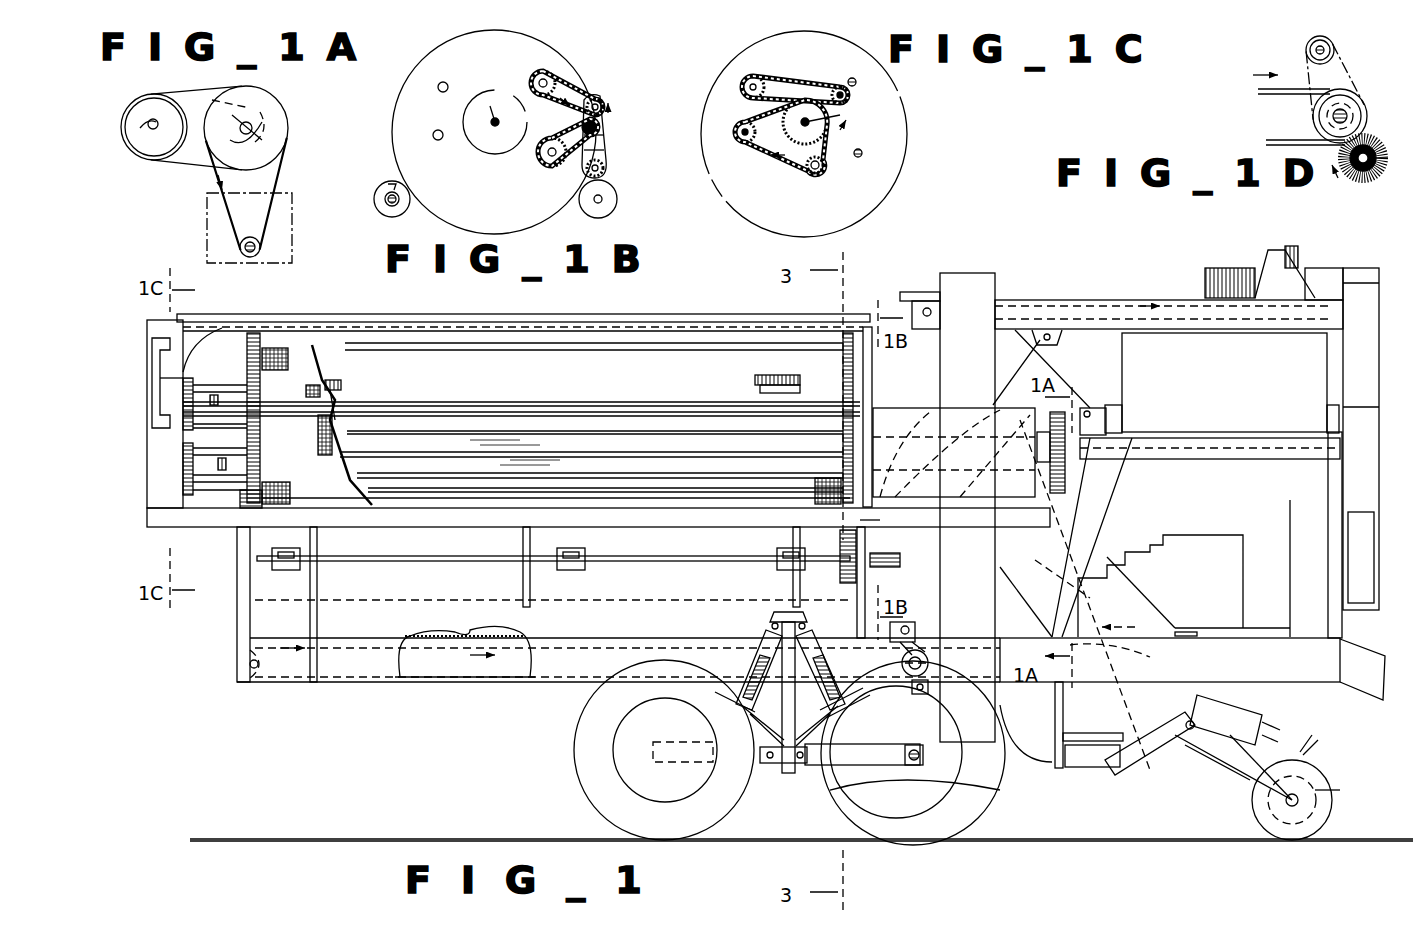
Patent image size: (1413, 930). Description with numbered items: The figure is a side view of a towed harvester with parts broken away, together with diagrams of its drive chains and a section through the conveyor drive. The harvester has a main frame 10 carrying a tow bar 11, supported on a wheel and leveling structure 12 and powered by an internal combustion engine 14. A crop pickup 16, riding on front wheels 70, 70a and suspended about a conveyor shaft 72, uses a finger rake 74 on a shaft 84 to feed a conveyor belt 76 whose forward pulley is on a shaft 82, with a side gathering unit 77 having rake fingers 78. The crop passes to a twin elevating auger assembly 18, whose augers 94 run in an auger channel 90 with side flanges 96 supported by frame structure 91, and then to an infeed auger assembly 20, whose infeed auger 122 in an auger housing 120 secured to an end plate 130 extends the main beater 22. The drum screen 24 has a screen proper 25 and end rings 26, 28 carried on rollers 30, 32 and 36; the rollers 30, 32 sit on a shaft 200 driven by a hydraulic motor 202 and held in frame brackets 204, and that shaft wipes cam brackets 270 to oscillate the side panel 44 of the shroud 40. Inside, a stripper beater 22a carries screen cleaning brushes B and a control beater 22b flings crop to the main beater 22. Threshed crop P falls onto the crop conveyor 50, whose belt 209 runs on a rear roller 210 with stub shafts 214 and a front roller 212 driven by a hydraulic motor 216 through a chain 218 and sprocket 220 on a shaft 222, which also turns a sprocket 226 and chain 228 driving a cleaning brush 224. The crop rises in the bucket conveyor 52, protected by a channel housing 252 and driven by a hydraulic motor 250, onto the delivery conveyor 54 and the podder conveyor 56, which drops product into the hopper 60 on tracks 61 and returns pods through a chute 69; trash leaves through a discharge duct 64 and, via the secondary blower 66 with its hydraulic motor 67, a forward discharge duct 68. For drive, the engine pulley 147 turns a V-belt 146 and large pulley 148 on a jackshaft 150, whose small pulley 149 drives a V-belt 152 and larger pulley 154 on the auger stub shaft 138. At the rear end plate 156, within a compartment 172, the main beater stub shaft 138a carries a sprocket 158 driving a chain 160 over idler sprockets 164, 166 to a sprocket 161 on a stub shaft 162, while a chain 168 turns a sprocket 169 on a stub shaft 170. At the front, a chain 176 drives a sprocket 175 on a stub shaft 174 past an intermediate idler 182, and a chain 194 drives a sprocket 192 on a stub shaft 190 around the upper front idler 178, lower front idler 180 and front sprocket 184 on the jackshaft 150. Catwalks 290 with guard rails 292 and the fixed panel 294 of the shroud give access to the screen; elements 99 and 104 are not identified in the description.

In FIG. 1, the main frame 10 is at (570, 683).
In FIG. 1, the tow bar 11 is at (1360, 650).
In FIG. 1, the wheel and leveling structure 12 is at (745, 665).
In FIG. 1A, the internal combustion engine 14 is at (207, 195).
In FIG. 1, the internal combustion engine 14 is at (1225, 564).
In FIG. 1, the crop pickup 16 is at (1320, 750).
In FIG. 1, the twin elevating auger assembly 18 is at (1149, 629).
In FIG. 1, the infeed auger assembly 20 is at (930, 412).
In FIG. 1, the main beater 22 is at (418, 440).
In FIG. 1, the stripper beater 22a is at (181, 410).
In FIG. 1, the control beater 22b is at (181, 474).
In FIG. 1A, the drum screen 24 is at (392, 120).
In FIG. 1B, the drum screen 24 is at (463, 132).
In FIG. 1C, the drum screen 24 is at (907, 100).
In FIG. 1, the drum screen 24 is at (245, 505).
In FIG. 1, the screen proper 25 is at (320, 368).
In FIG. 1, the end ring 26 is at (254, 333).
In FIG. 1, the end ring 28 is at (842, 366).
In FIG. 1, the roller 30 is at (237, 575).
In FIG. 1B, the roller 32 is at (390, 182).
In FIG. 1, the roller 32 is at (845, 530).
In FIG. 1B, the roller 36 is at (604, 200).
In FIG. 1, the shroud 40 is at (330, 313).
In FIG. 1, the oscillating side panel 44 is at (450, 548).
In FIG. 1D, the crop conveyor 50 is at (1265, 140).
In FIG. 1, the crop conveyor 50 is at (415, 640).
In FIG. 1, the bucket conveyor 52 is at (1000, 298).
In FIG. 1, the delivery conveyor 54 is at (1015, 305).
In FIG. 1, the podder conveyor 56 is at (1088, 400).
In FIG. 1, the hopper 60 is at (1228, 376).
In FIG. 1, the tracks 61 is at (1122, 410).
In FIG. 1, the discharge duct 64 is at (1030, 765).
In FIG. 1, the secondary blower 66 is at (1318, 268).
In FIG. 1, the hydraulic motor 67 is at (1292, 246).
In FIG. 1, the forward discharge duct 68 is at (1340, 530).
In FIG. 1, the chute 69 is at (1056, 346).
In FIG. 1, the front wheel 70 is at (1262, 822).
In FIG. 1, the front wheel 70a is at (1345, 783).
In FIG. 1, the conveyor shaft 72 is at (1192, 725).
In FIG. 1, the finger rake 74 is at (1312, 735).
In FIG. 1, the conveyor belt 76 is at (1195, 757).
In FIG. 1, the gathering unit 77 is at (1255, 703).
In FIG. 1, the rake fingers 78 is at (1270, 730).
In FIG. 1, the shaft 82 is at (1242, 767).
In FIG. 1, the shaft 84 is at (1286, 800).
In FIG. 1, the twin auger channel 90 is at (1024, 598).
In FIG. 1, the frame structure 91 is at (1055, 707).
In FIG. 1, the auger 94 is at (1088, 598).
In FIG. 1, the side flanges 96 is at (1115, 563).
In FIG. 1, the drive chain 99 is at (1122, 658).
In FIG. 1, the lift link 104 is at (1150, 765).
In FIG. 1, the auger housing 120 is at (897, 407).
In FIG. 1, the infeed auger 122 is at (884, 522).
In FIG. 1, the end plate 130 is at (867, 327).
In FIG. 1A, the stub shaft 138 is at (150, 135).
In FIG. 1B, the stub shaft 138 is at (495, 121).
In FIG. 1, the stub shaft 138 is at (1065, 458).
In FIG. 1C, the rear stub shaft 138a is at (842, 122).
In FIG. 1A, the V-belt 146 is at (210, 173).
In FIG. 1A, the engine pulley 147 is at (242, 245).
In FIG. 1A, the large pulley 148 is at (282, 100).
In FIG. 1A, the small pulley 149 is at (238, 133).
In FIG. 1A, the jackshaft 150 is at (246, 112).
In FIG. 1B, the jackshaft 150 is at (600, 129).
In FIG. 1A, the V-belt 152 is at (190, 92).
In FIG. 1, the V-belt 152 is at (1065, 487).
In FIG. 1A, the larger pulley 154 is at (150, 100).
In FIG. 1, the larger pulley 154 is at (1065, 472).
In FIG. 1, the end plate 156 is at (184, 372).
In FIG. 1C, the front sprocket 158 is at (800, 92).
In FIG. 1C, the chain 160 is at (836, 140).
In FIG. 1C, the sprocket 161 is at (762, 75).
In FIG. 1C, the stub shaft 162 is at (745, 90).
In FIG. 1C, the idler sprocket 164 is at (843, 86).
In FIG. 1C, the idler sprocket 166 is at (824, 168).
In FIG. 1C, the chain 168 is at (797, 150).
In FIG. 1C, the sprocket 169 is at (753, 148).
In FIG. 1C, the stub shaft 170 is at (738, 138).
In FIG. 1, the compartment 172 is at (160, 365).
In FIG. 1B, the front stub shaft 174 is at (531, 80).
In FIG. 1B, the sprocket 175 is at (548, 66).
In FIG. 1B, the chain 176 is at (568, 78).
In FIG. 1B, the upper front idler 178 is at (600, 96).
In FIG. 1B, the lower front idler 180 is at (604, 168).
In FIG. 1B, the intermediate idler 182 is at (604, 154).
In FIG. 1B, the front sprocket 184 is at (604, 140).
In FIG. 1B, the front stub shaft 190 is at (538, 155).
In FIG. 1B, the sprocket 192 is at (552, 166).
In FIG. 1B, the chain 194 is at (572, 165).
In FIG. 1, the shaft 200 is at (400, 563).
In FIG. 1B, the hydraulic motor 202 is at (382, 197).
In FIG. 1, the hydraulic motor 202 is at (900, 565).
In FIG. 1, the frame brackets 204 is at (317, 590).
In FIG. 1D, the belt 209 is at (1258, 90).
In FIG. 1, the belt 209 is at (420, 680).
In FIG. 1, the rear roller 210 is at (260, 682).
In FIG. 1D, the front roller 212 is at (1312, 117).
In FIG. 1, the front roller 212 is at (900, 665).
In FIG. 1, the roller stub shafts 214 is at (250, 672).
In FIG. 1D, the hydraulic motor 216 is at (1306, 47).
In FIG. 1D, the chain 218 is at (1306, 66).
In FIG. 1, the chain 218 is at (925, 640).
In FIG. 1D, the sprocket 220 is at (1336, 62).
In FIG. 1D, the shaft 222 is at (1352, 100).
In FIG. 1, the shaft 222 is at (928, 655).
In FIG. 1D, the rotatable brush 224 is at (1362, 183).
In FIG. 1D, the sprocket 226 is at (1352, 122).
In FIG. 1D, the chain 228 is at (1301, 148).
In FIG. 1, the chain 228 is at (928, 690).
In FIG. 1, the hydraulic motor 250 is at (910, 293).
In FIG. 1, the channel housing 252 is at (960, 262).
In FIG. 1, the cam brackets 270 is at (300, 560).
In FIG. 1, the catwalks 290 is at (386, 514).
In FIG. 1, the guard rails 292 is at (160, 388).
In FIG. 1, the fixed panel 294 is at (424, 315).
In FIG. 1, the screen cleaning brushes B is at (342, 386).
In FIG. 1, the threshed crop P is at (465, 638).